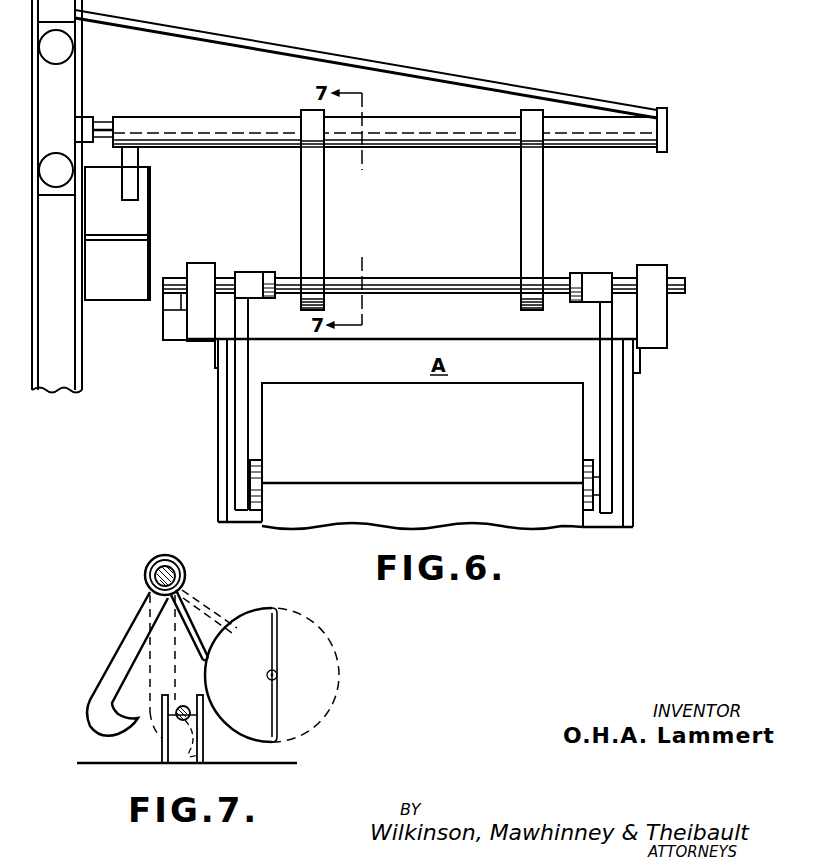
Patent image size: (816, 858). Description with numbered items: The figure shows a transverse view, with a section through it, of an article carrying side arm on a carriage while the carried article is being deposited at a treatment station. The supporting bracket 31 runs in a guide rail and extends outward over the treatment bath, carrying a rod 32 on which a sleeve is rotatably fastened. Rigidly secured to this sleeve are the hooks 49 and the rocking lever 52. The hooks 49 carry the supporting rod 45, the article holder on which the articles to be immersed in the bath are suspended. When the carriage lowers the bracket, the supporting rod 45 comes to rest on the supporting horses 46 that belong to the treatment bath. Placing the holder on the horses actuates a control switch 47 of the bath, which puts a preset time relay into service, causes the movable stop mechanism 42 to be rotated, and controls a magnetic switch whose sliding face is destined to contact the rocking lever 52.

In FIG. 6, the supporting bracket 31 is at (369, 62).
In FIG. 7, the supporting bracket 31 is at (179, 577).
In FIG. 6, the rod 32 is at (190, 117).
In FIG. 7, the rod 32 is at (190, 537).
In FIG. 6, the adjustable stop mechanism 42 is at (134, 213).
In FIG. 7, the adjustable stop mechanism 42 is at (258, 647).
In FIG. 6, the supporting rod 45 is at (434, 262).
In FIG. 7, the supporting rod 45 is at (200, 752).
In FIG. 6, the supporting horses 46 is at (175, 281).
In FIG. 7, the supporting horses 46 is at (162, 752).
In FIG. 6, the control switch 47 is at (168, 298).
In FIG. 6, the hooks 49 is at (314, 227).
In FIG. 7, the hooks 49 is at (122, 643).
In FIG. 6, the rocking lever 52 is at (138, 156).
In FIG. 7, the rocking lever 52 is at (186, 617).